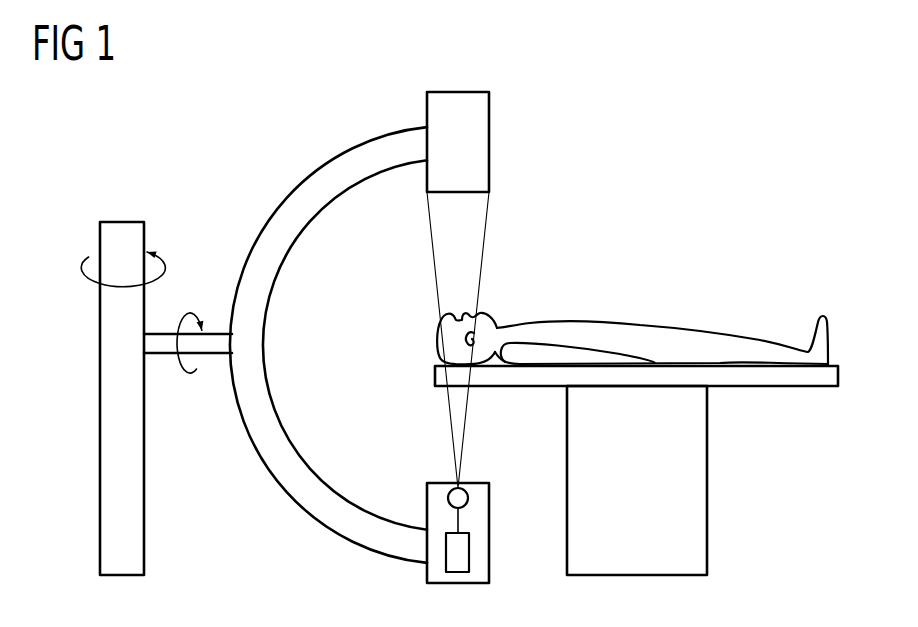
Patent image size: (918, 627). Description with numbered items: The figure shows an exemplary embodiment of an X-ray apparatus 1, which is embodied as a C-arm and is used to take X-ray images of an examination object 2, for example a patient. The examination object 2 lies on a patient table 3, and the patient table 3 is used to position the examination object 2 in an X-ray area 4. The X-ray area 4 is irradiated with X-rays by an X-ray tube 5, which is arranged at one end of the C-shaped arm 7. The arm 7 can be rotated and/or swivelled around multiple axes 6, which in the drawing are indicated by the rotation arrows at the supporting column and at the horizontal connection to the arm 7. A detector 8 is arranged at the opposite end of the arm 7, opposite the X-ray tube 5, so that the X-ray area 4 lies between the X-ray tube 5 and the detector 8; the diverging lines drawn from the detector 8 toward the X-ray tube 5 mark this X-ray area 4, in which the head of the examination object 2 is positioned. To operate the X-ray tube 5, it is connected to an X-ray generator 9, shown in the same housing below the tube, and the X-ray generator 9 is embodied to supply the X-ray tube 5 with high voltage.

The X-ray apparatus 1 is at (698, 190).
The examination object 2 is at (647, 338).
The patient table 3 is at (780, 378).
The X-ray area 4 is at (528, 260).
The X-ray tube 5 is at (469, 498).
The axes 6 is at (90, 256).
The arm 7 is at (327, 172).
The detector 8 is at (470, 138).
The X-ray generator 9 is at (458, 551).